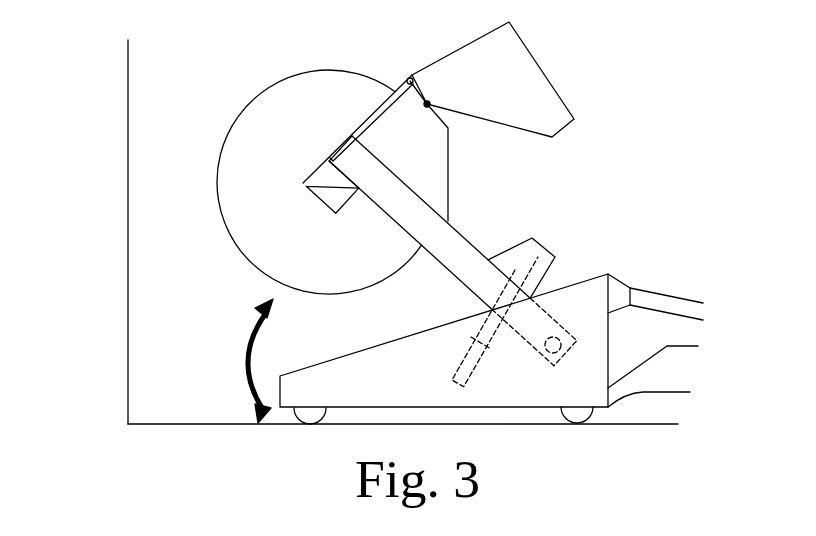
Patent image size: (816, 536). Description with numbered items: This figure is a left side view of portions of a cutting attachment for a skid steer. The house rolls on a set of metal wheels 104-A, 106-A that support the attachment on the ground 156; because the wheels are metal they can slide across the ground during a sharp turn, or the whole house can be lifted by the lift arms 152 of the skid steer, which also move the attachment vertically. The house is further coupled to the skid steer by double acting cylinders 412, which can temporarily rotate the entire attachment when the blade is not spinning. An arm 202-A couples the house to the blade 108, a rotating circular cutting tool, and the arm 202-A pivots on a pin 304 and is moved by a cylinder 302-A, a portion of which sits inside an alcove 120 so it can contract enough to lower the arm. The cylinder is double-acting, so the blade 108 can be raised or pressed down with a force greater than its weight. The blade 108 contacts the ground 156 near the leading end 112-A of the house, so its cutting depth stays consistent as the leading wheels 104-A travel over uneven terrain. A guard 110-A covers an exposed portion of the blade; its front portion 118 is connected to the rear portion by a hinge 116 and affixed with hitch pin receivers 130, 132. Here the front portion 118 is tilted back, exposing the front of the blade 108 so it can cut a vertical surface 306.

The leading wheel 104-A is at (302, 424).
The wheel 106-A is at (578, 424).
The blade 108 is at (220, 195).
The guard 110-A is at (449, 173).
The leading end 112-A is at (284, 398).
The hinge 116 is at (407, 78).
The front portion 118 is at (553, 82).
The alcove 120 is at (552, 266).
The hitch pin receiver 130 is at (430, 104).
The hitch pin receiver 132 is at (418, 107).
The lift arm 152 is at (688, 394).
The ground 156 is at (178, 425).
The arm 202-A is at (472, 242).
The cylinder 302-A is at (490, 342).
The pin 304 is at (556, 335).
The vertical surface 306 is at (127, 256).
The double acting cylinder 412 is at (660, 292).